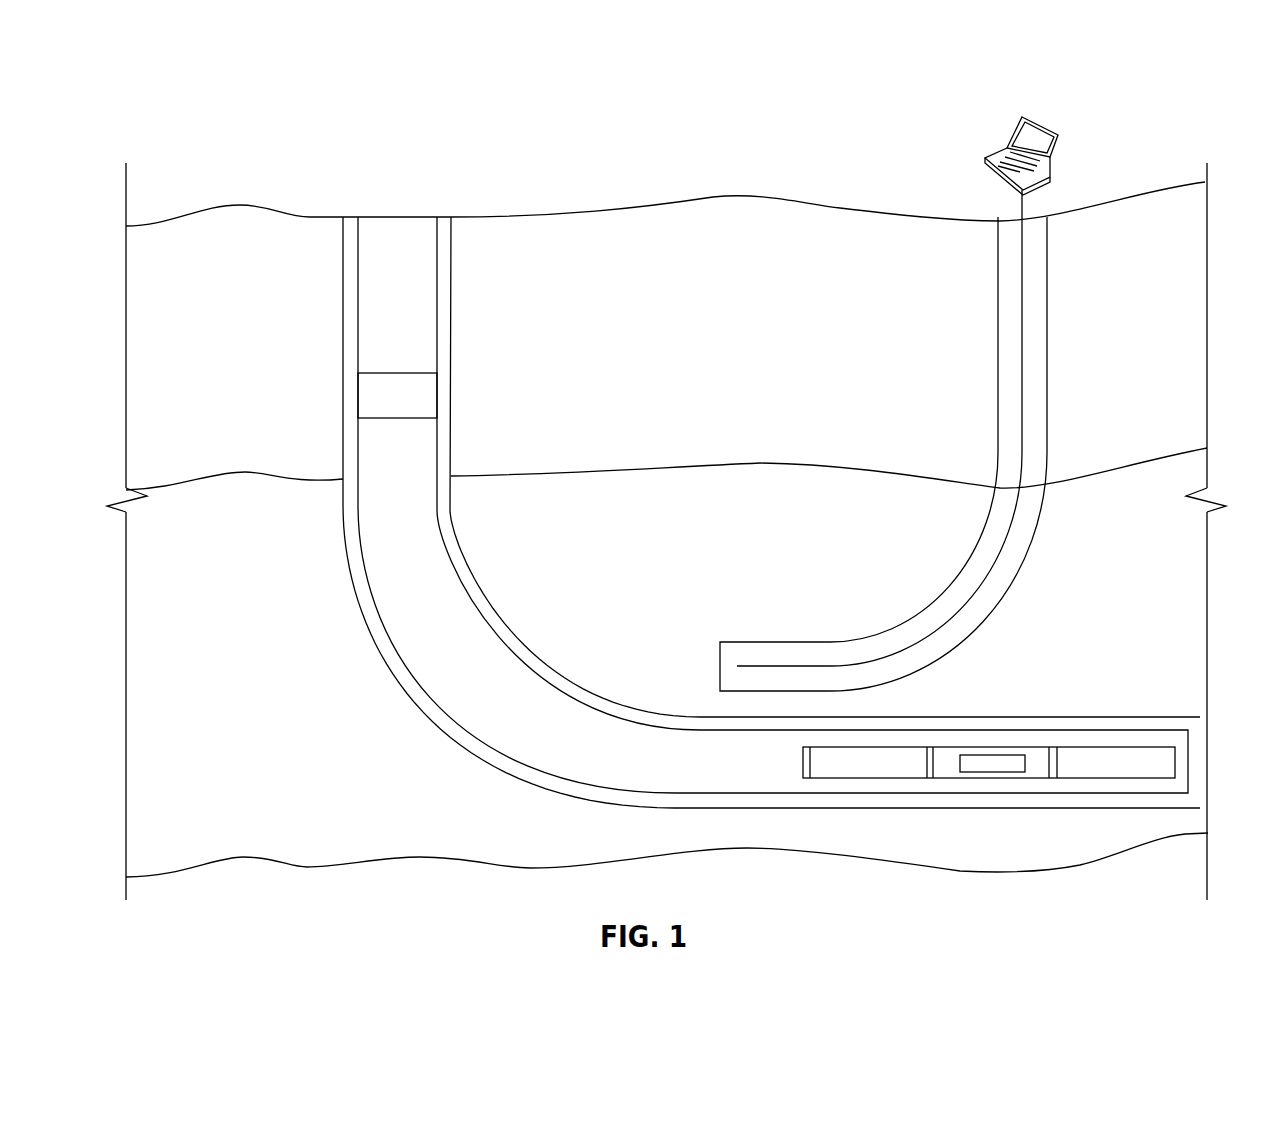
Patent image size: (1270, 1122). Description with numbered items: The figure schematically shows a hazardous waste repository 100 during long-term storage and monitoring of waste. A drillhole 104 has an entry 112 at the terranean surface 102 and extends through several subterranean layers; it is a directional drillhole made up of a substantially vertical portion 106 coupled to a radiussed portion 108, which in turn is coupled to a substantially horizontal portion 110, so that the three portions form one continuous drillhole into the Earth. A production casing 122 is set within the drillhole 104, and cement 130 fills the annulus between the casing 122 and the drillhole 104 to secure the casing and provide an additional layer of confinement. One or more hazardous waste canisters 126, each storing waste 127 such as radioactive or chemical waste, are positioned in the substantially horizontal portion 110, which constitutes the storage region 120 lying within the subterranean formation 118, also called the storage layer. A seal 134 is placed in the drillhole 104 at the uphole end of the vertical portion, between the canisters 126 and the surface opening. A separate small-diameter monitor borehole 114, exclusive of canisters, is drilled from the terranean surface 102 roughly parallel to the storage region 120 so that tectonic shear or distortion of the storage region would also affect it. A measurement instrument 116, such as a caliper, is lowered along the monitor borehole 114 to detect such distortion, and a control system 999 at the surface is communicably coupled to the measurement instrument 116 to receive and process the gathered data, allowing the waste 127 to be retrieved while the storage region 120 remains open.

The hazardous waste repository 100 is at (989, 70).
The terranean surface 102 is at (713, 197).
The drillhole 104 is at (580, 686).
The substantially vertical portion 106 is at (452, 343).
The radiussed portion 108 is at (375, 645).
The substantially horizontal portion 110 is at (1026, 719).
The entry 112 is at (378, 237).
The monitor borehole 114 is at (1048, 312).
The measurement instrument 116 is at (1022, 427).
The subterranean formation 118 is at (618, 543).
The storage region 120 is at (1000, 808).
The production casing 122 is at (379, 618).
The hazardous waste canister 126 is at (837, 760).
The waste 127 is at (996, 765).
The cement 130 is at (466, 748).
The seal 134 is at (414, 406).
The control system 999 is at (1050, 155).